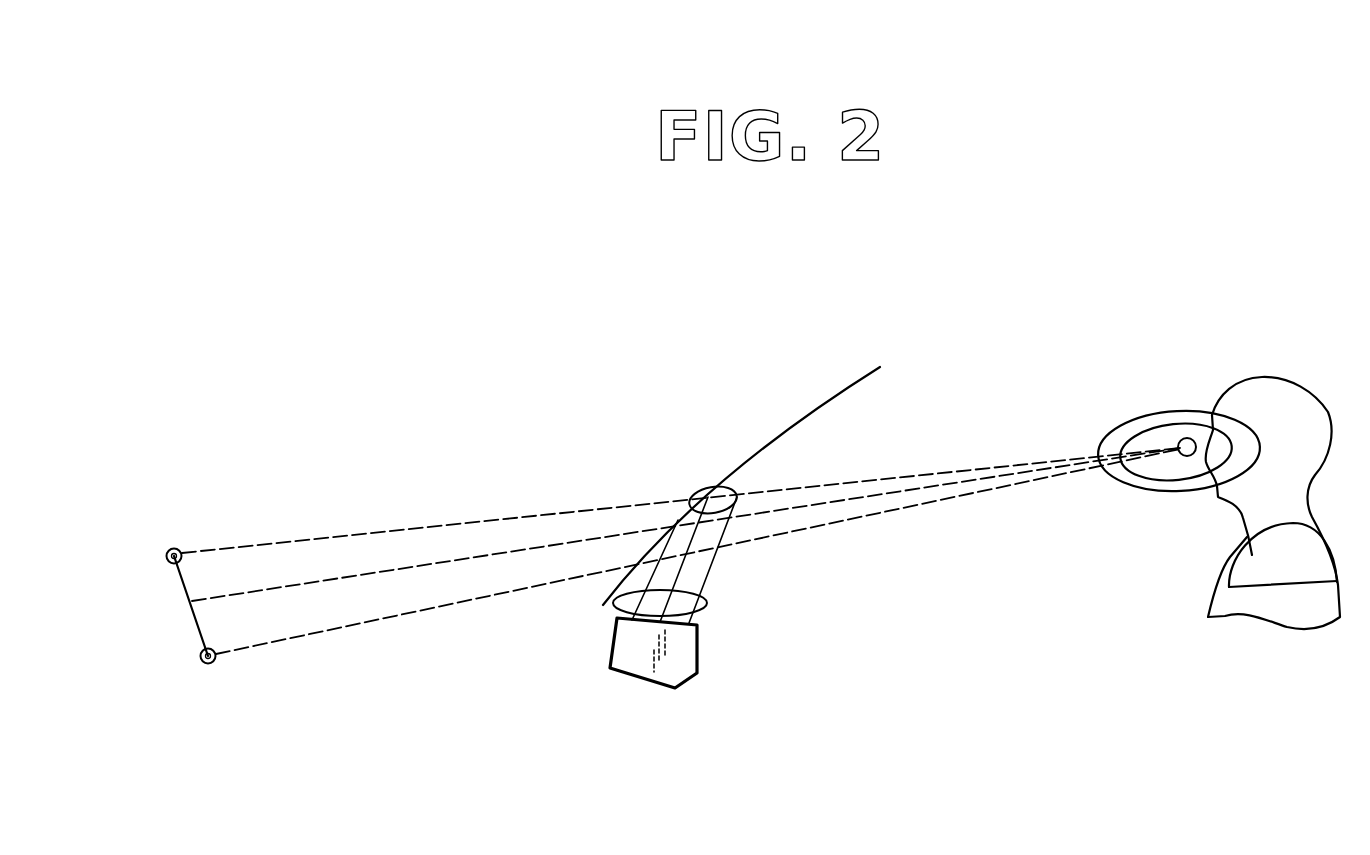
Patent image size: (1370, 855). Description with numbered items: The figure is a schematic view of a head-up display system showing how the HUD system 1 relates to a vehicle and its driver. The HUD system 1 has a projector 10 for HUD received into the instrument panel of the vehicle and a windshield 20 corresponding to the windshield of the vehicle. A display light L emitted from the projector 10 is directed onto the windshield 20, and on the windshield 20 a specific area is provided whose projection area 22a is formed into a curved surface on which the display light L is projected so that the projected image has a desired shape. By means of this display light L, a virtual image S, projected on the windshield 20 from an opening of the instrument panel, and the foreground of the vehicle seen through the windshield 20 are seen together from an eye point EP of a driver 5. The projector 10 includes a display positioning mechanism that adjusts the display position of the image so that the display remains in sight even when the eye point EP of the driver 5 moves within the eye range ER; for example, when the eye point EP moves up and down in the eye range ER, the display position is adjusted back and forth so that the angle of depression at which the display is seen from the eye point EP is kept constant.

The HUD system 1 is at (613, 448).
The windshield 20 is at (795, 422).
The projection area 22a is at (730, 484).
The display light L is at (707, 601).
The projector 10 is at (603, 645).
The virtual image S is at (195, 622).
The eye range ER is at (1122, 415).
The eye point EP is at (1183, 437).
The driver 5 is at (1292, 367).